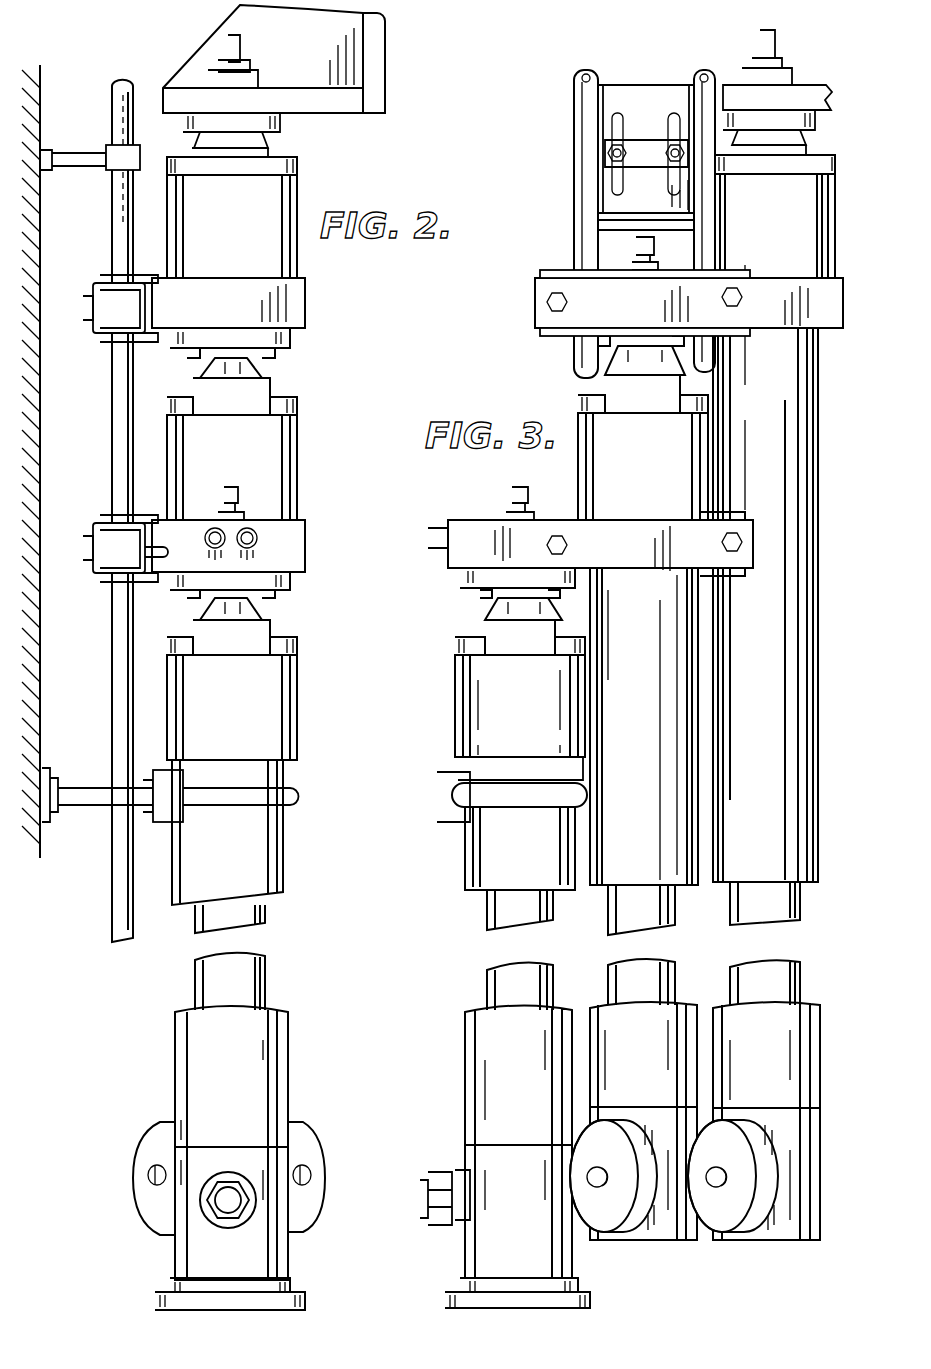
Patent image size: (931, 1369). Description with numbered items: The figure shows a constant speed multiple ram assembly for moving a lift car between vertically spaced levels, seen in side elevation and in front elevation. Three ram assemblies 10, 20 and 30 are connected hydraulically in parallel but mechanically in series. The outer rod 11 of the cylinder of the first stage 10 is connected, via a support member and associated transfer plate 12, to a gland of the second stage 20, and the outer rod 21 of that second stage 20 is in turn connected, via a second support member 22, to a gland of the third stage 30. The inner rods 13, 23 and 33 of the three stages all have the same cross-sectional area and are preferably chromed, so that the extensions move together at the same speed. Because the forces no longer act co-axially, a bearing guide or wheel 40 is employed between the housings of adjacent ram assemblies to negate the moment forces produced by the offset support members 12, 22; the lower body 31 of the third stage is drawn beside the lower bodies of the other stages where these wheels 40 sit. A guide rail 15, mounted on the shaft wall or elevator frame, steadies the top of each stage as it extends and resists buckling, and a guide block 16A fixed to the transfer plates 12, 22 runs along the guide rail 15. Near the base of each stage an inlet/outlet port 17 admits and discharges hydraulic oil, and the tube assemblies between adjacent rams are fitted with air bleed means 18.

In FIG. 2, the first stage ram assembly 10 is at (178, 962).
In FIG. 3, the first stage ram assembly 10 is at (473, 702).
In FIG. 2, the outer rod 11 is at (268, 862).
In FIG. 3, the outer rod 11 is at (500, 1050).
In FIG. 2, the transfer plate 12 is at (298, 561).
In FIG. 3, the transfer plate 12 is at (480, 548).
In FIG. 2, the inner rod 13 is at (268, 962).
In FIG. 3, the inner rod 13 is at (500, 917).
In FIG. 2, the guide rail 15 is at (120, 238).
In FIG. 3, the guide rail 15 is at (690, 25).
In FIG. 2, the guide block 16A is at (108, 312).
In FIG. 3, the guide block 16A is at (535, 338).
In FIG. 2, the inlet/outlet port 17 is at (222, 1203).
In FIG. 3, the inlet/outlet port 17 is at (432, 1225).
In FIG. 2, the air bleed means 18 is at (243, 513).
In FIG. 3, the air bleed means 18 is at (515, 497).
In FIG. 2, the second stage ram assembly 20 is at (308, 432).
In FIG. 3, the second stage ram assembly 20 is at (697, 727).
In FIG. 3, the outer rod 21 is at (656, 1050).
In FIG. 2, the second support member 22 is at (300, 312).
In FIG. 3, the second support member 22 is at (573, 288).
In FIG. 3, the inner rod 23 is at (628, 912).
In FIG. 2, the third stage ram assembly 30 is at (308, 178).
In FIG. 3, the third stage ram assembly 30 is at (822, 448).
In FIG. 3, the lower body of third cylinder 31 is at (800, 1058).
In FIG. 3, the inner rod 33 is at (782, 908).
In FIG. 2, the bearing guide wheel 40 is at (150, 1152).
In FIG. 3, the bearing guide wheel 40 is at (722, 1205).